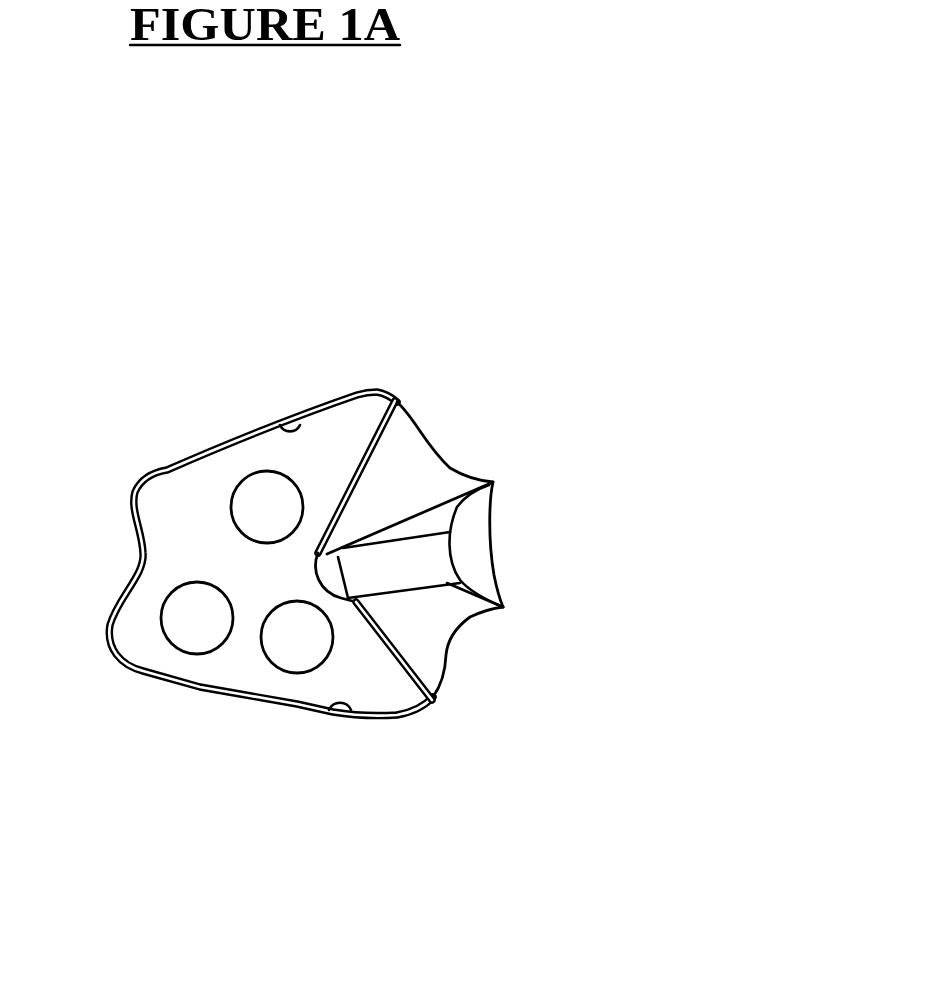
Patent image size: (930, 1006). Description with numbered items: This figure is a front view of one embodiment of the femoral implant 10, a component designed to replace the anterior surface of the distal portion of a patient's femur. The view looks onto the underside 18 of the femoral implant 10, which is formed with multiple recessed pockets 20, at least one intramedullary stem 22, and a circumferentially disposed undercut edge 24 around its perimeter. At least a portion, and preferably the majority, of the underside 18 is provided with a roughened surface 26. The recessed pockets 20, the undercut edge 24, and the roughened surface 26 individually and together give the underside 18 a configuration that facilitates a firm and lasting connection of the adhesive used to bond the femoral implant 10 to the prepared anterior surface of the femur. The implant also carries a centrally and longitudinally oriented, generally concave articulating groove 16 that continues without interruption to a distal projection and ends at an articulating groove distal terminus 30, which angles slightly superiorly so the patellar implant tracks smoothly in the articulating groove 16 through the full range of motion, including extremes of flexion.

The femoral implant 10 is at (405, 577).
The articulating groove 16 is at (557, 605).
The underside 18 is at (240, 652).
The recessed pockets 20 is at (265, 508).
The intramedullary stem 22 is at (388, 568).
The undercut edge 24 is at (298, 423).
The roughened surface 26 is at (320, 475).
The articulating groove distal terminus 30 is at (503, 605).